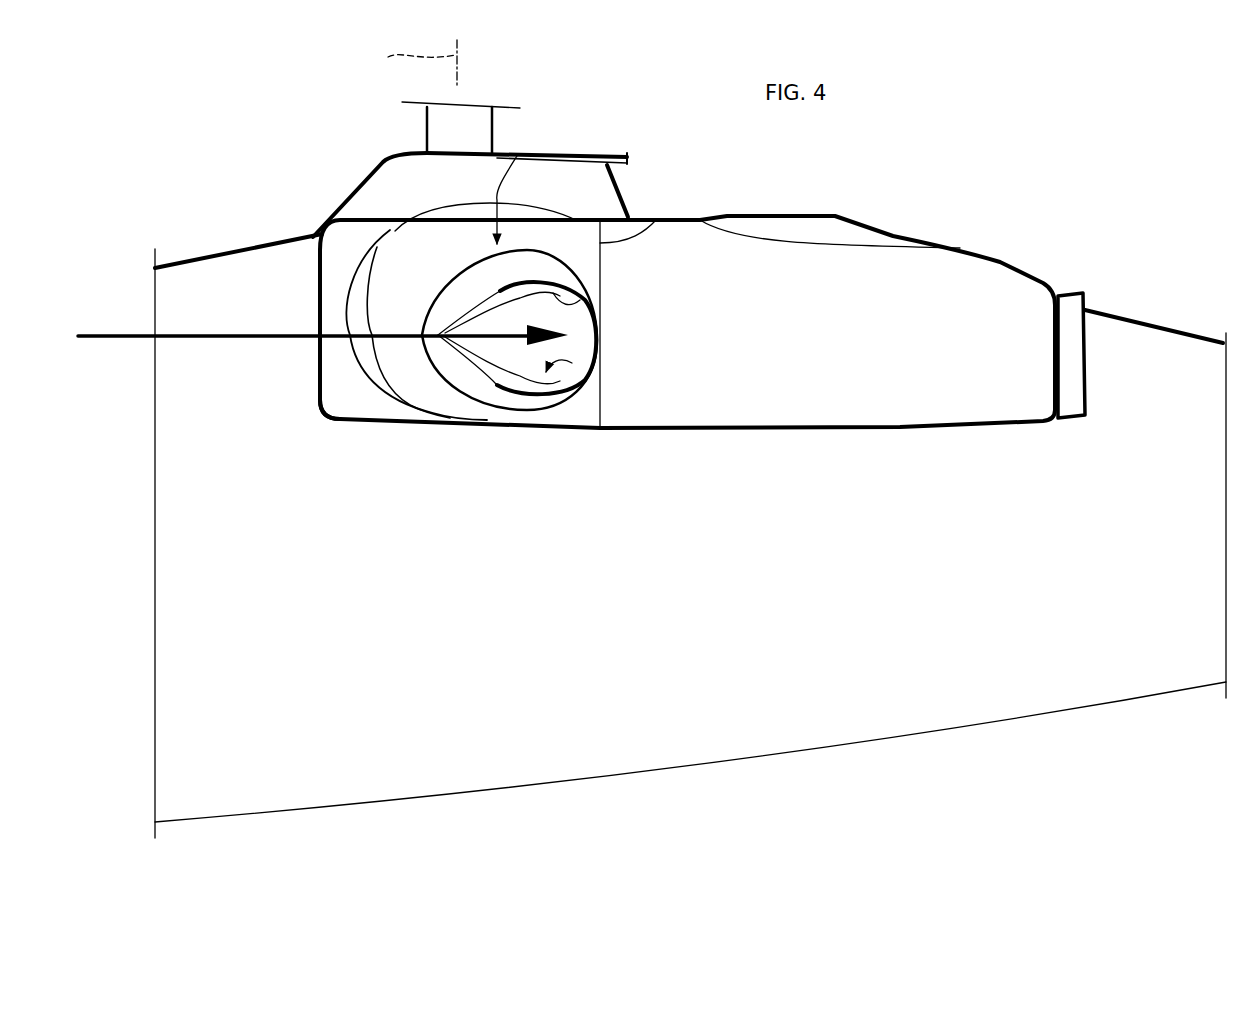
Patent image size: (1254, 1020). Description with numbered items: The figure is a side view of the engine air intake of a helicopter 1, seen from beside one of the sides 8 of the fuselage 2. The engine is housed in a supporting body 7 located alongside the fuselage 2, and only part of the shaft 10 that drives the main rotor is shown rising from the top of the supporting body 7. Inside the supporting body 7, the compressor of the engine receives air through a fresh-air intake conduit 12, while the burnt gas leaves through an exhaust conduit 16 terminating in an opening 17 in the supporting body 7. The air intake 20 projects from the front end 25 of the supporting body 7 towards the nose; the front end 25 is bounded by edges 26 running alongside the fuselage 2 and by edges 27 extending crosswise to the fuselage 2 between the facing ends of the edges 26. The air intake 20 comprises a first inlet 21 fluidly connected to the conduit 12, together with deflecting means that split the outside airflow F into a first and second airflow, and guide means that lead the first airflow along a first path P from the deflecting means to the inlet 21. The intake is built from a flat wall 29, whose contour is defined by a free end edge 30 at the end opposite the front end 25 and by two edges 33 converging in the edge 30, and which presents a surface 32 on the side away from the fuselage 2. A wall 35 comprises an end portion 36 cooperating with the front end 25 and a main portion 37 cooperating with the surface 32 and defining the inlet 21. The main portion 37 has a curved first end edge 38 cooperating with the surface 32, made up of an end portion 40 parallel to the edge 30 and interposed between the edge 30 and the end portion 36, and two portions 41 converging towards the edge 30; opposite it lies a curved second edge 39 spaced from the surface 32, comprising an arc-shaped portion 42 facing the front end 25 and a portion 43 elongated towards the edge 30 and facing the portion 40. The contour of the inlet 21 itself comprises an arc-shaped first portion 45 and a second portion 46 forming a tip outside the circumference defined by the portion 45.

The helicopter 1 is at (872, 173).
The fuselage 2 is at (1118, 665).
The supporting body 7 is at (943, 257).
The sides 8 is at (935, 625).
The shaft 10 is at (478, 112).
The fresh-air intake conduit 12 is at (597, 296).
The exhaust conduit 16 is at (1073, 307).
The opening 17 is at (1095, 347).
The air intake 20 is at (320, 447).
The first inlet 21 is at (598, 370).
The front end 25 is at (657, 218).
The edges 26 is at (600, 412).
The edges 27 is at (607, 163).
The flat wall 29 is at (312, 424).
The free end edge 30 is at (336, 270).
The surface 32 is at (320, 272).
The edges 33 is at (383, 285).
The wall 35 is at (532, 442).
The end portion 36 is at (573, 413).
The main portion 37 is at (352, 280).
The curved first end edge 38 is at (394, 406).
The curved second edge 39 is at (525, 153).
The end portion 40 is at (350, 352).
The portions 41 is at (420, 250).
The arc-shaped portion 42 is at (597, 335).
The portion 43 is at (440, 298).
The arc-shaped first portion 45 is at (553, 290).
The second portion 46 is at (500, 428).
The airflow F is at (137, 342).
The first path P is at (332, 427).